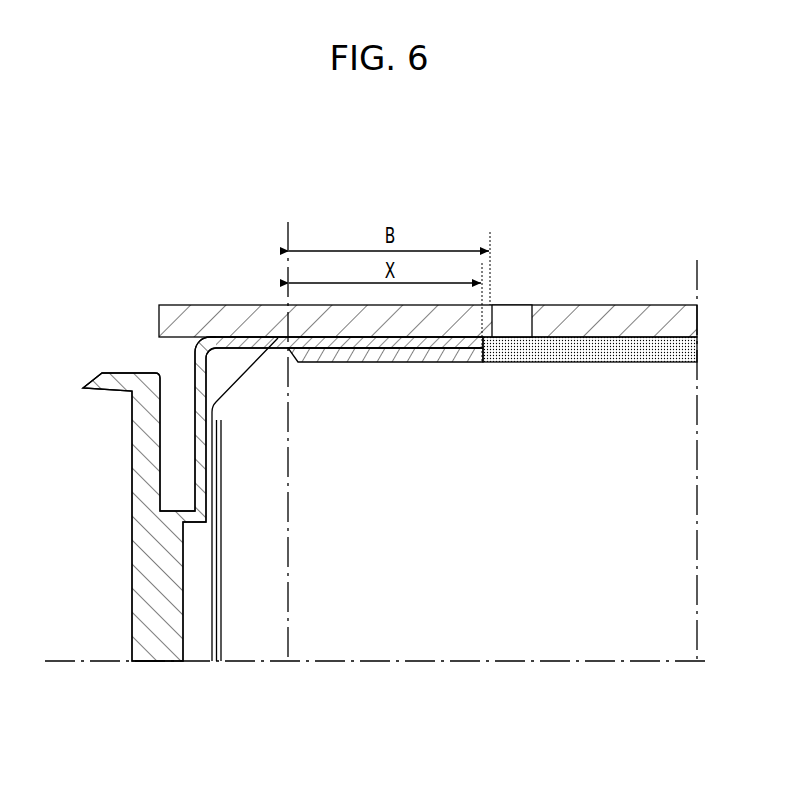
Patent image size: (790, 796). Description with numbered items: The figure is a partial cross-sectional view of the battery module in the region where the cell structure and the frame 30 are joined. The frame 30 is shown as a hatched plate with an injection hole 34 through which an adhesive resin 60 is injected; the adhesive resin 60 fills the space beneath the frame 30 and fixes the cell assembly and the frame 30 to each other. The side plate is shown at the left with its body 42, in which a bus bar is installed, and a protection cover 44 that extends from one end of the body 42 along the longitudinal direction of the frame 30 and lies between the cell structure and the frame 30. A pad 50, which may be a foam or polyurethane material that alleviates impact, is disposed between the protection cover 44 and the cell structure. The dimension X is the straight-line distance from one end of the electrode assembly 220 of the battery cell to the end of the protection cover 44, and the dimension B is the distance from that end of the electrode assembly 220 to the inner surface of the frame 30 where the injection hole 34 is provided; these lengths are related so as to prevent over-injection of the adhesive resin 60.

The frame 30 is at (614, 296).
The injection hole 34 is at (530, 319).
The body 42 is at (162, 648).
The protection cover 44 is at (276, 336).
The pad 50 is at (465, 363).
The adhesive resin 60 is at (662, 352).
The electrode assembly 220 is at (468, 583).